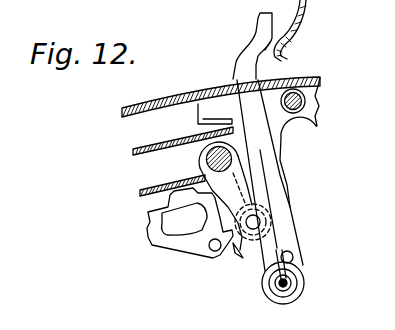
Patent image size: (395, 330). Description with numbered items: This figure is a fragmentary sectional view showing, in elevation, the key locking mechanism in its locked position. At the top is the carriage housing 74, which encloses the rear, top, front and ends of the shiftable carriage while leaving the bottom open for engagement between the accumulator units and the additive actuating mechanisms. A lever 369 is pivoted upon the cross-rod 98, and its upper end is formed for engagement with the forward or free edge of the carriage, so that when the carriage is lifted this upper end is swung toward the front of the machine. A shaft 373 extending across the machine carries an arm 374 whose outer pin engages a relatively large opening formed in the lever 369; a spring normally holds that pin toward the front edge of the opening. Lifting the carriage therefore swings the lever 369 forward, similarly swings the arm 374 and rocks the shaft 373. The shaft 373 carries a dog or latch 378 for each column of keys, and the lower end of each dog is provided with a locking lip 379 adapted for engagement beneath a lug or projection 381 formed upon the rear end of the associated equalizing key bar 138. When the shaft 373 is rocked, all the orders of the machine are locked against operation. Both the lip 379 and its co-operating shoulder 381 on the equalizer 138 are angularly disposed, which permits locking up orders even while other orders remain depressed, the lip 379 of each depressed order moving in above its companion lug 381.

The carriage housing 74 is at (299, 26).
The lever 369 is at (253, 105).
The shaft 373 is at (201, 158).
The arm 374 is at (250, 193).
The dog or latch 378 is at (242, 202).
The locking lip 379 is at (231, 256).
The lug or projection 381 is at (227, 233).
The equalizing key bar 138 is at (148, 214).
The cross-rod 98 is at (293, 280).